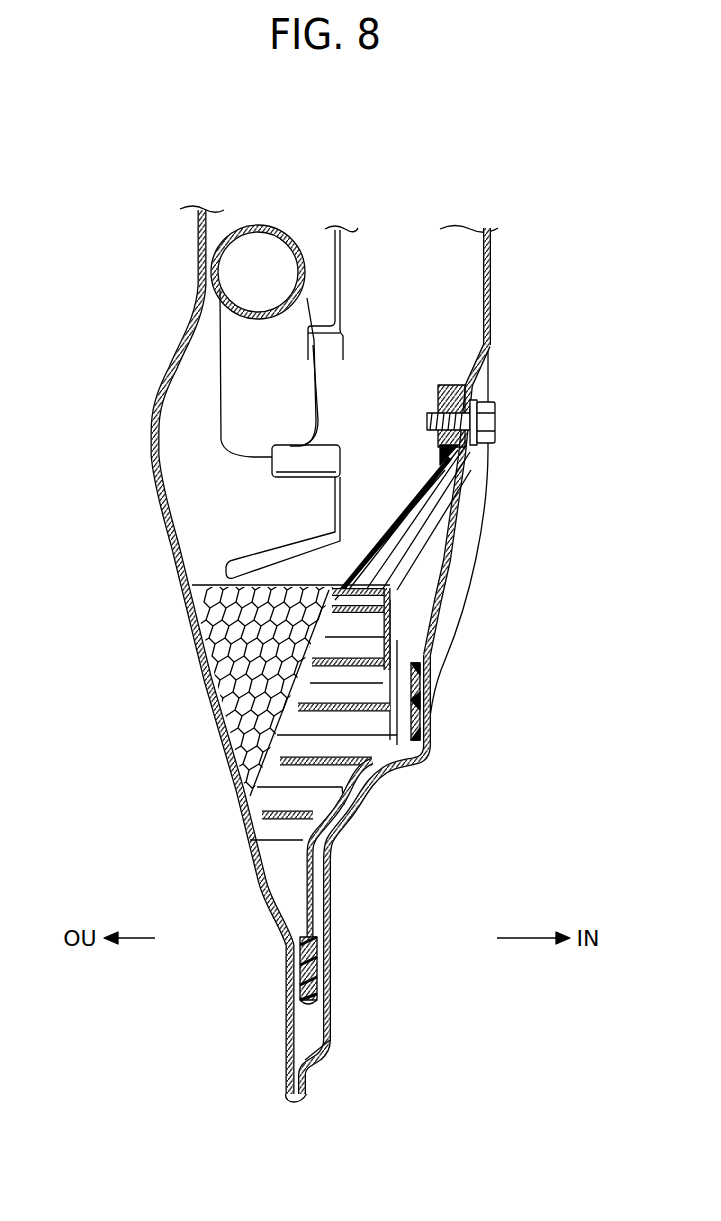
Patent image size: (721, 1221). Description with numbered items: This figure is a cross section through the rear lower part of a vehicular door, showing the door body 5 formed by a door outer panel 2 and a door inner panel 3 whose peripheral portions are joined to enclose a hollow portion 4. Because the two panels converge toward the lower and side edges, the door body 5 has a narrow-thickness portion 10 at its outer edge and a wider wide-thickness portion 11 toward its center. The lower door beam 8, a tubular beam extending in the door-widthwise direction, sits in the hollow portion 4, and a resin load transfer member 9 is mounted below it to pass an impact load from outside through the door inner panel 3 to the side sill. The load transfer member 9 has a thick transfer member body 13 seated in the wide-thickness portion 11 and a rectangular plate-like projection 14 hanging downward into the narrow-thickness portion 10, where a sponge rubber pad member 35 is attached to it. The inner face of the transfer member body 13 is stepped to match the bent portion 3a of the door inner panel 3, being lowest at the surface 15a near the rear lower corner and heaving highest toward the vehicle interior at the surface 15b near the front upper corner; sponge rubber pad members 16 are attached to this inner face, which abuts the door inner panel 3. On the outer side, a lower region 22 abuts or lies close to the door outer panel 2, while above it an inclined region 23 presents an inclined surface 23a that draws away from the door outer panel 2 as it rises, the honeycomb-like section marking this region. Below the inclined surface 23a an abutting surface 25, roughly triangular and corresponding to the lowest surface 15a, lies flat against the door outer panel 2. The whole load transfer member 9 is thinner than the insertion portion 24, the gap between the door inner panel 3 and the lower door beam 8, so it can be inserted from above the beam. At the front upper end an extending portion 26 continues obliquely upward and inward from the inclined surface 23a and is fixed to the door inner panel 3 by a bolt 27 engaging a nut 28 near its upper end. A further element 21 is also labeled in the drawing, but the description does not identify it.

The door outer panel 2 is at (168, 362).
The door inner panel 3 is at (493, 253).
The bent portion 3a is at (373, 782).
The hollow portion 4 is at (168, 465).
The door body 5 is at (505, 318).
The lower door beam 8 is at (272, 226).
The load transfer member 9 is at (430, 600).
The narrow-thickness portion 10 is at (320, 1040).
The wide-thickness portion 11 is at (410, 633).
The transfer member body 13 is at (397, 650).
The projection 14 is at (312, 985).
The lowest surface 15a is at (324, 847).
The highest surface 15b is at (413, 728).
The pad member 16 is at (418, 688).
The bracket 21 is at (347, 337).
The lower region 22 is at (221, 812).
The inclined region 23 is at (253, 690).
The inclined surface 23a is at (260, 717).
The insertion portion 24 is at (440, 265).
The abutting surface 25 is at (257, 850).
The extending portion 26 is at (427, 520).
The bolt 27 is at (490, 418).
The nut 28 is at (450, 405).
The pad member 35 is at (290, 1022).